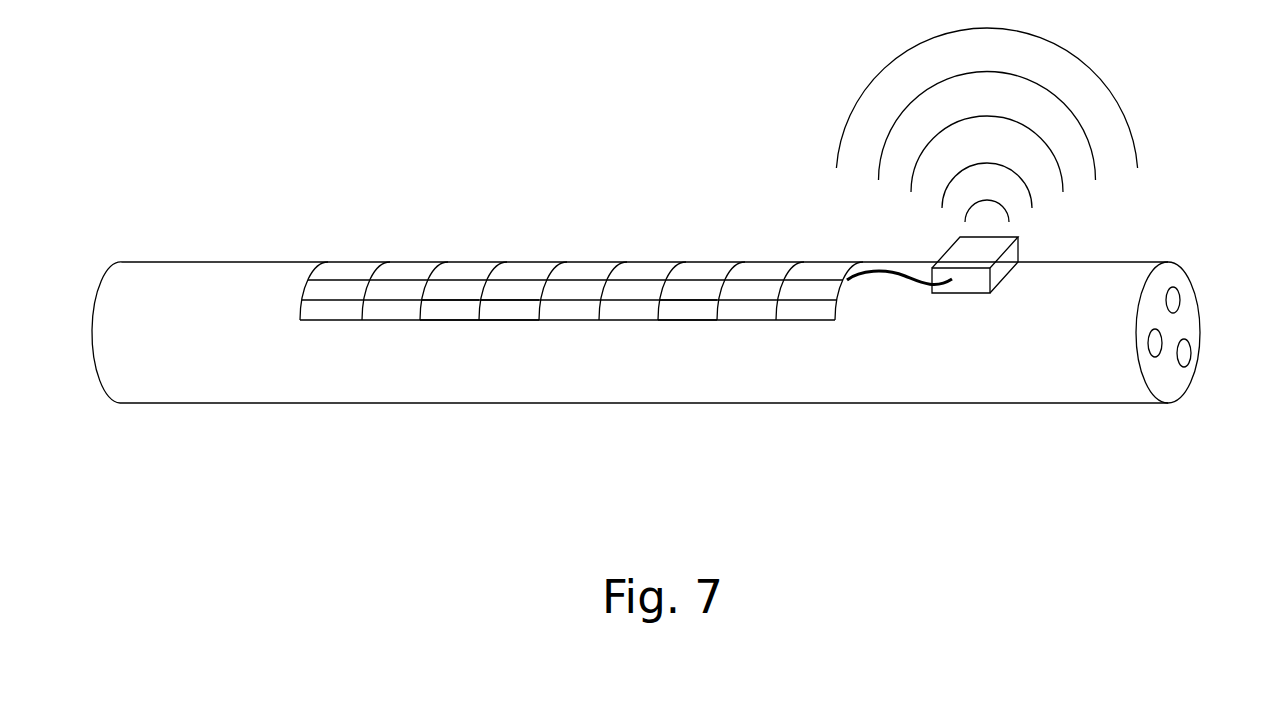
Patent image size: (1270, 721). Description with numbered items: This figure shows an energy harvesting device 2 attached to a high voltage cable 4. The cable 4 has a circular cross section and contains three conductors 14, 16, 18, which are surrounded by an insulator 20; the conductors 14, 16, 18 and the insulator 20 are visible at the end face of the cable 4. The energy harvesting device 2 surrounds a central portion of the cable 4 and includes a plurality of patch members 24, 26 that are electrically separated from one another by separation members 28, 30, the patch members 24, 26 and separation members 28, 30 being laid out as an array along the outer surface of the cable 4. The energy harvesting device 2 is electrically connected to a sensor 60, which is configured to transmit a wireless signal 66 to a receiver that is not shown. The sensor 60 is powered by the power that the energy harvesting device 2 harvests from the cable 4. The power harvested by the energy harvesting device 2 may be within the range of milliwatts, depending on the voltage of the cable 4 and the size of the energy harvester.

The energy harvesting device 2 is at (670, 315).
The high voltage cable 4 is at (185, 305).
The conductor 14 is at (1173, 298).
The conductor 16 is at (1184, 352).
The conductor 18 is at (1157, 338).
The insulator 20 is at (1190, 320).
The patch member 24 is at (462, 305).
The patch member 26 is at (517, 312).
The separation member 28 is at (675, 302).
The separation member 30 is at (581, 311).
The sensor 60 is at (958, 250).
The wireless signal 66 is at (865, 74).